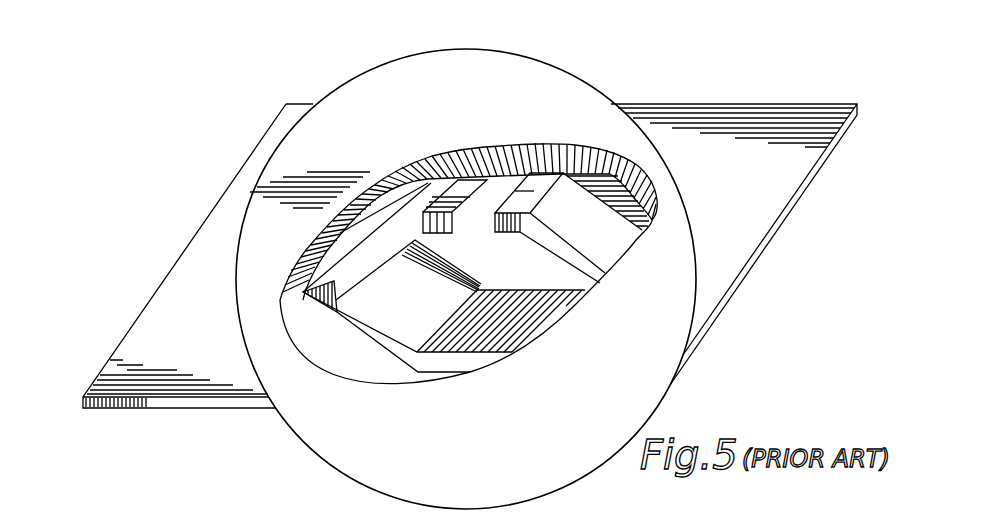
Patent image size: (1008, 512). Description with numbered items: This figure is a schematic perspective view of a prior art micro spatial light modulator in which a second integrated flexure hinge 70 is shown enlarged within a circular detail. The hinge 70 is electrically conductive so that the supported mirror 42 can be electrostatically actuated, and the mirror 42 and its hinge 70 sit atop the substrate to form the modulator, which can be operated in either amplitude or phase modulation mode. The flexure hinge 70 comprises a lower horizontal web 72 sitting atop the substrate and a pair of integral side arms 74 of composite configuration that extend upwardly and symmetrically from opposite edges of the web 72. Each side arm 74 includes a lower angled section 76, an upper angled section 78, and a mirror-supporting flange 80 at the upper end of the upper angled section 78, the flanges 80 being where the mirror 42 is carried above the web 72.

The mirror 42 is at (741, 100).
The second flexure hinge 70 is at (355, 337).
The lower horizontal web 72 is at (504, 330).
The side arm 74 is at (393, 205).
The lower angled section 76 is at (403, 300).
The upper angled section 78 is at (378, 229).
The mirror-supporting flange 80 is at (521, 196).